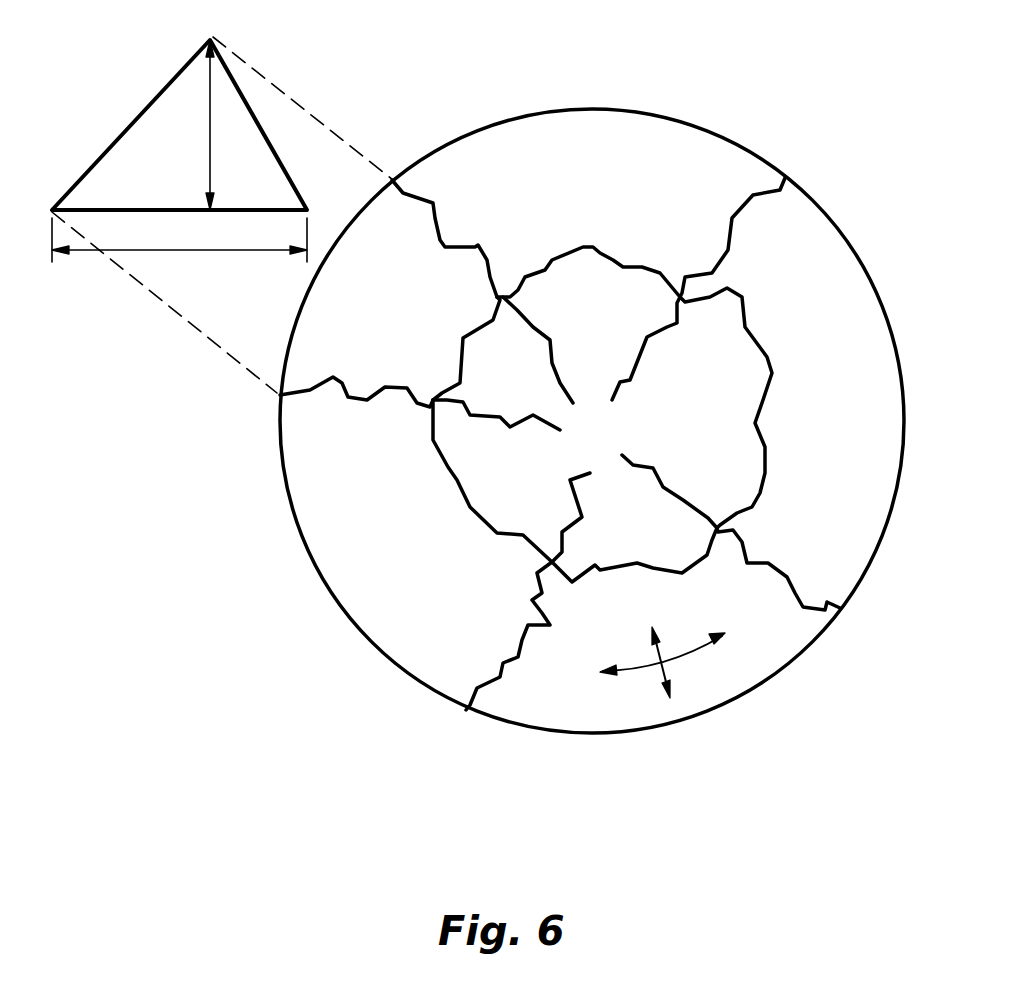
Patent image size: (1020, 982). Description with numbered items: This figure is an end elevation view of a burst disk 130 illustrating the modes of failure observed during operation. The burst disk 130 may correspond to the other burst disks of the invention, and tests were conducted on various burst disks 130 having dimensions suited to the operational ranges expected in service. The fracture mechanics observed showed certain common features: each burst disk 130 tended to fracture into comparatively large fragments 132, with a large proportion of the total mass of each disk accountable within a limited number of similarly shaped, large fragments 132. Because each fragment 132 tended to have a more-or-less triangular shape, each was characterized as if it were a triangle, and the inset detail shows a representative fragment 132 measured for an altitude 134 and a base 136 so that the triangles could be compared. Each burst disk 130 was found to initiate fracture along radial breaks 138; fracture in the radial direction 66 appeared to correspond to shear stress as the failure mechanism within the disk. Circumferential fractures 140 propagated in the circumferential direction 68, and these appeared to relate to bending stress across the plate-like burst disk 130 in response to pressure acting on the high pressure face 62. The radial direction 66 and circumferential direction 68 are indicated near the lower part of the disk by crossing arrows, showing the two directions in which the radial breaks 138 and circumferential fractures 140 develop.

The high pressure face 62 is at (572, 140).
The radial direction 66 is at (667, 670).
The circumferential direction 68 is at (637, 670).
The burst disk 130 is at (723, 130).
The fragment 132 is at (143, 147).
The altitude 134 is at (213, 97).
The base 136 is at (140, 250).
The radial break 138 is at (357, 398).
The circumferential fracture 140 is at (455, 480).